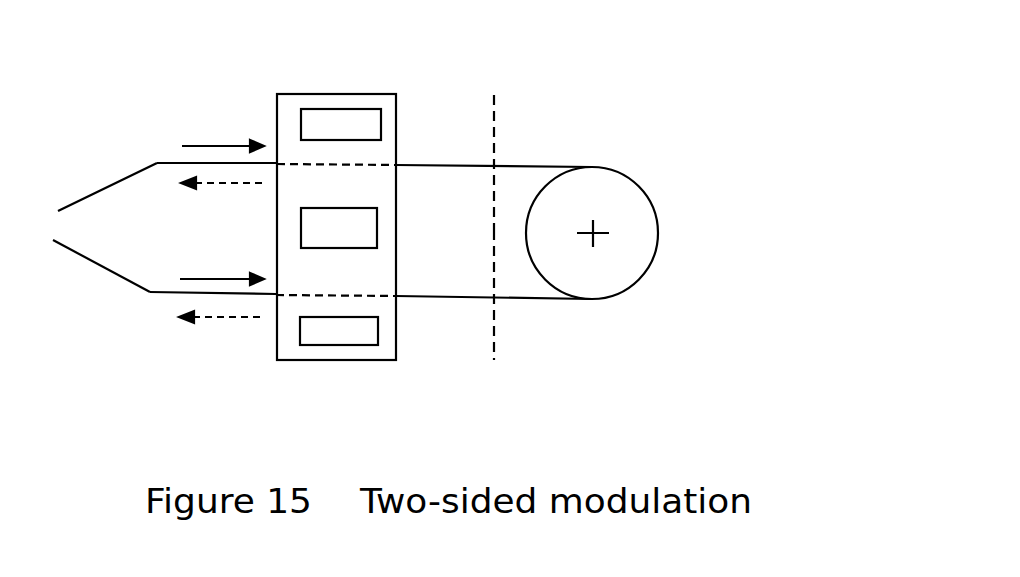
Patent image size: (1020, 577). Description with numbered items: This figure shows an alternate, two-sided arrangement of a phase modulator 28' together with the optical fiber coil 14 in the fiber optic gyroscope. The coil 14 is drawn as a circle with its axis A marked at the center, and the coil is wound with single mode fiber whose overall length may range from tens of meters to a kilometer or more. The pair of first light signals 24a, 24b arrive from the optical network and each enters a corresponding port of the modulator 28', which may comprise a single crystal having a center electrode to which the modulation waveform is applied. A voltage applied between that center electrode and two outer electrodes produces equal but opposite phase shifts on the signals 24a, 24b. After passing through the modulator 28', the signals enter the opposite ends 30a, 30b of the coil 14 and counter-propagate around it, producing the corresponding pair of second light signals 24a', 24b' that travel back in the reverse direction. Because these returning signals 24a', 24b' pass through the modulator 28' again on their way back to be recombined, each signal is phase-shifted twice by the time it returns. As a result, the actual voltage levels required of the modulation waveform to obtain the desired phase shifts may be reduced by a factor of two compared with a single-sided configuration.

The first light signal 24a is at (205, 105).
The second light signal 24a' is at (205, 363).
The first light signal 24b is at (173, 344).
The second light signal 24b' is at (167, 123).
The phase modulator 28' is at (385, 195).
The first end of coil 30a is at (494, 133).
The second end of coil 30b is at (494, 333).
The optical fiber coil 14 is at (658, 213).
The coil axis A is at (598, 242).